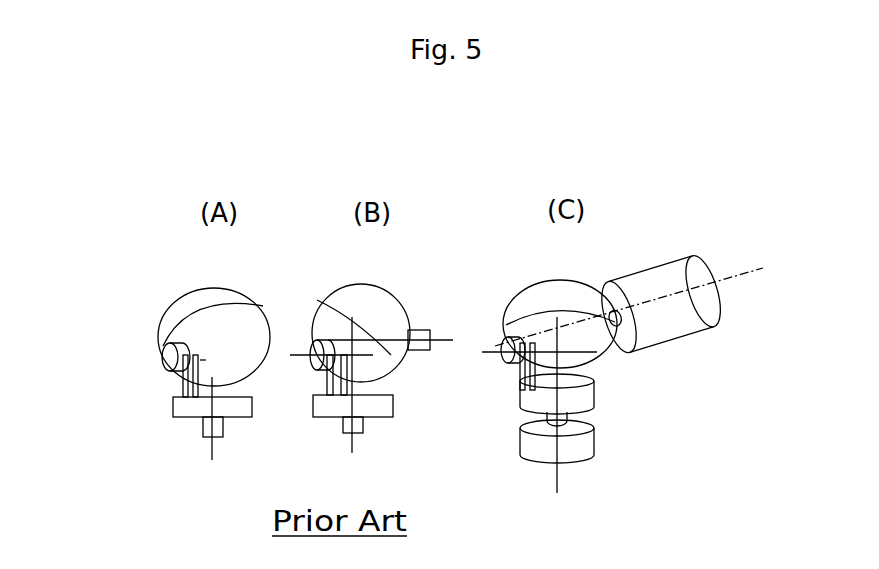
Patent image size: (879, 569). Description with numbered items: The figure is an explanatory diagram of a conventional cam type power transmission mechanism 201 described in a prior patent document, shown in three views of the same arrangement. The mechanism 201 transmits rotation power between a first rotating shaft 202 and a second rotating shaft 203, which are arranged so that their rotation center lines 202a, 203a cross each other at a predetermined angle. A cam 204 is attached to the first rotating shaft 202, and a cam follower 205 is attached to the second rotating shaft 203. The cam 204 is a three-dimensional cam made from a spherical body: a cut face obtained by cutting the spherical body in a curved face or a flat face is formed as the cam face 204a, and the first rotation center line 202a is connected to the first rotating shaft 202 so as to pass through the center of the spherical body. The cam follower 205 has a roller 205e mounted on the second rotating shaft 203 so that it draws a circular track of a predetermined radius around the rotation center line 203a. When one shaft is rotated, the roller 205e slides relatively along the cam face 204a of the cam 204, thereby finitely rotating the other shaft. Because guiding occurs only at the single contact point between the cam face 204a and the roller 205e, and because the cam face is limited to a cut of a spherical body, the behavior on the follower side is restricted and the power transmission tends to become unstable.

The cam type power transmission mechanism 201 is at (648, 393).
The first rotating shaft 202 is at (674, 261).
The rotation center line of first rotating shaft 202a is at (742, 278).
The second rotating shaft 203 is at (599, 446).
The rotation center line of second rotating shaft 203a is at (561, 478).
The cam 204 is at (228, 277).
The cam face 204a is at (195, 322).
The cam follower 205 is at (157, 428).
The roller 205e is at (166, 346).